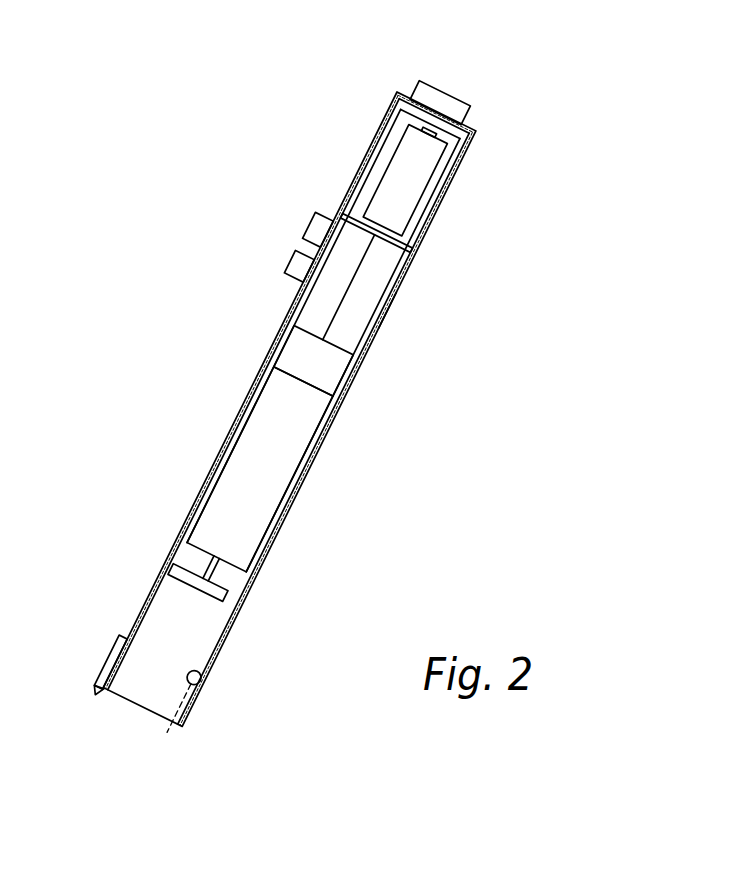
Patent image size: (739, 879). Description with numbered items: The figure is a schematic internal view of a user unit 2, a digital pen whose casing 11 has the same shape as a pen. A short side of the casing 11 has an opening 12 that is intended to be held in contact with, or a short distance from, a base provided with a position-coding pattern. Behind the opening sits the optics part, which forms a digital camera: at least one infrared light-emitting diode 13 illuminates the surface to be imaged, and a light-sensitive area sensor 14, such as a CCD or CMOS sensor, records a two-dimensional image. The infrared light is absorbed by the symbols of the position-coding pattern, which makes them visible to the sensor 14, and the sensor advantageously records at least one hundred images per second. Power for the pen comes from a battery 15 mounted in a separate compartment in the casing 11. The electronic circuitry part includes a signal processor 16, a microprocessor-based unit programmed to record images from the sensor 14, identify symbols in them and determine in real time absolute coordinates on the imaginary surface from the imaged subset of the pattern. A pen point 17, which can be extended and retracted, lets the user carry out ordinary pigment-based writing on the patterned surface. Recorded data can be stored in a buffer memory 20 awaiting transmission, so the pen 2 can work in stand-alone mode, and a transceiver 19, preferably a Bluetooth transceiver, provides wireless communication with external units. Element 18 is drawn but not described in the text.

The user unit 2 is at (410, 286).
The casing 11 is at (363, 381).
The opening 12 is at (135, 708).
The infrared light-emitting diode 13 is at (203, 681).
The light-sensitive area sensor 14 is at (228, 588).
The battery 15 is at (402, 190).
The signal processor 16 is at (270, 477).
The pen point 17 is at (110, 650).
The switches 18 is at (308, 236).
The transceiver 19 is at (441, 96).
The buffer memory 20 is at (302, 360).